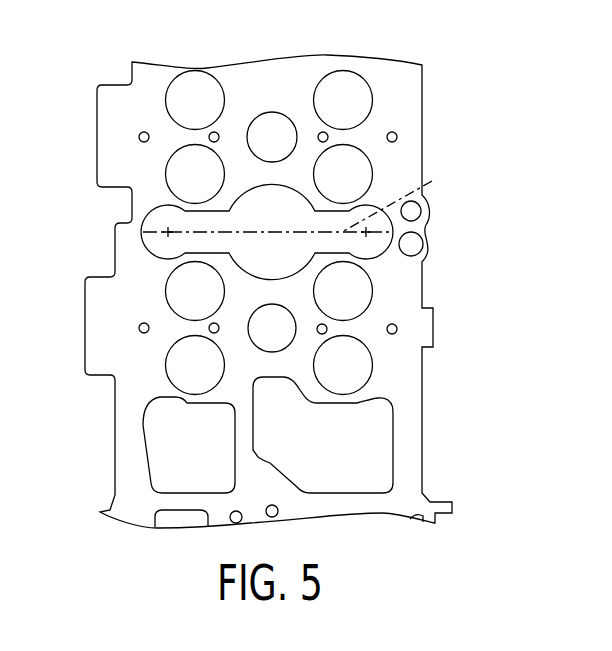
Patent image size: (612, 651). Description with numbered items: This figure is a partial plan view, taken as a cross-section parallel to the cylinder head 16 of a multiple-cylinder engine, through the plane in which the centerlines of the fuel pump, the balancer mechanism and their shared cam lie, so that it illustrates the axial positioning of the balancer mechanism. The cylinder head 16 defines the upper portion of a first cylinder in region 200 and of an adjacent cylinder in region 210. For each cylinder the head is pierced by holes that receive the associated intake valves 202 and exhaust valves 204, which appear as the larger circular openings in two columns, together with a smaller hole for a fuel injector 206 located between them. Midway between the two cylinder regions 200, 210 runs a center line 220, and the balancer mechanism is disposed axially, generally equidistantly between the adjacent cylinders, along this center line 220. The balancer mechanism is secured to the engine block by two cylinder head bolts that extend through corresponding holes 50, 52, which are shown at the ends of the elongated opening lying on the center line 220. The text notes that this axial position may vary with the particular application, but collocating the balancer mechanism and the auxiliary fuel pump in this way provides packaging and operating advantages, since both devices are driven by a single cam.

The cylinder head 16 is at (407, 97).
The cylinder head bolt hole 50 is at (375, 238).
The cylinder head bolt hole 52 is at (161, 234).
The first cylinder region 200 is at (136, 352).
The intake valve holes 202 is at (185, 85).
The exhaust valve holes 204 is at (348, 80).
The fuel injector hole 206 is at (273, 123).
The adjacent cylinder region 210 is at (128, 133).
The center line 220 is at (402, 199).